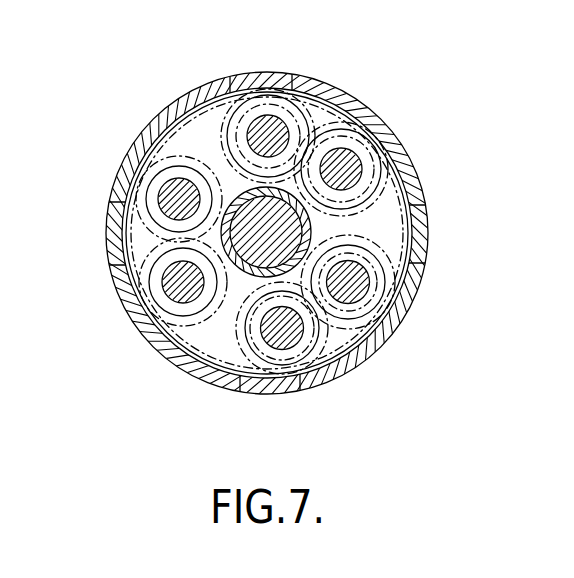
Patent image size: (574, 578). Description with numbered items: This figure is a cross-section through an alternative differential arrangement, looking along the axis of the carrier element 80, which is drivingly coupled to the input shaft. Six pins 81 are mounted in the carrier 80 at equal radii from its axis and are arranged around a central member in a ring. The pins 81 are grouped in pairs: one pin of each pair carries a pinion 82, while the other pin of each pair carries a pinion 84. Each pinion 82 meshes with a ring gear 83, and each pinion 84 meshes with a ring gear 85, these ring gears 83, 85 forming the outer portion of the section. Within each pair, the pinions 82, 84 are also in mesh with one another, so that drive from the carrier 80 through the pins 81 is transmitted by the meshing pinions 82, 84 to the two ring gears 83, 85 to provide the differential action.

The carrier element 80 is at (377, 213).
The pin 81 is at (348, 283).
The pinion 82 is at (301, 115).
The ring gear 83 is at (372, 123).
The pinion 84 is at (143, 219).
The ring gear 85 is at (265, 78).